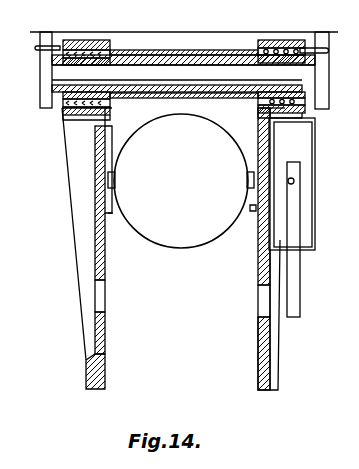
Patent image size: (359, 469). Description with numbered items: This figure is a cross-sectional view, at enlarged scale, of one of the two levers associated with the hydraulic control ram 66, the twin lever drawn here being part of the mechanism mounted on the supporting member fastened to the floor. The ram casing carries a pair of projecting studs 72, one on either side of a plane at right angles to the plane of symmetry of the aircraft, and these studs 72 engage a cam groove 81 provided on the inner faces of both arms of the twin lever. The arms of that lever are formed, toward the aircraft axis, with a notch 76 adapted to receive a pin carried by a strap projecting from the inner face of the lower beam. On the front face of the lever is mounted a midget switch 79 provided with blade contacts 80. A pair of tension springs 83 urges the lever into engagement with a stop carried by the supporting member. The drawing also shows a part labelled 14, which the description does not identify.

The tension spring 83 is at (88, 45).
The control ram 66 is at (181, 181).
The projecting stud 72 is at (116, 179).
The cam groove 81 is at (112, 213).
The left leg 14 is at (104, 332).
The midget switch 79 is at (308, 186).
The notch 76 is at (262, 303).
The blade contact 80 is at (298, 301).